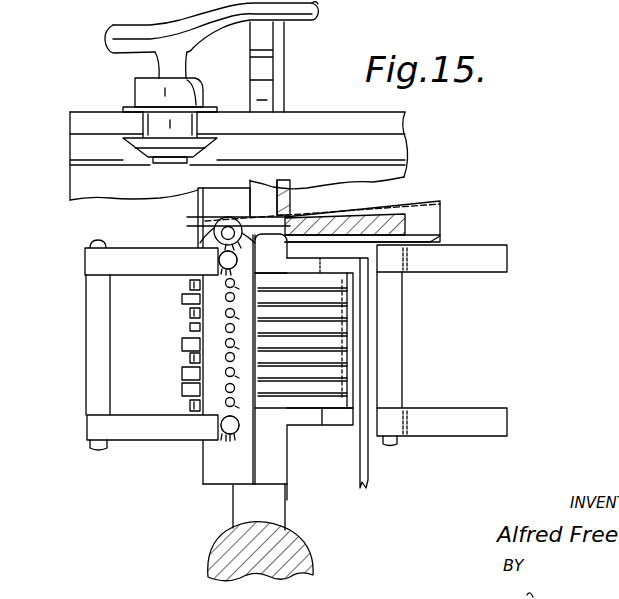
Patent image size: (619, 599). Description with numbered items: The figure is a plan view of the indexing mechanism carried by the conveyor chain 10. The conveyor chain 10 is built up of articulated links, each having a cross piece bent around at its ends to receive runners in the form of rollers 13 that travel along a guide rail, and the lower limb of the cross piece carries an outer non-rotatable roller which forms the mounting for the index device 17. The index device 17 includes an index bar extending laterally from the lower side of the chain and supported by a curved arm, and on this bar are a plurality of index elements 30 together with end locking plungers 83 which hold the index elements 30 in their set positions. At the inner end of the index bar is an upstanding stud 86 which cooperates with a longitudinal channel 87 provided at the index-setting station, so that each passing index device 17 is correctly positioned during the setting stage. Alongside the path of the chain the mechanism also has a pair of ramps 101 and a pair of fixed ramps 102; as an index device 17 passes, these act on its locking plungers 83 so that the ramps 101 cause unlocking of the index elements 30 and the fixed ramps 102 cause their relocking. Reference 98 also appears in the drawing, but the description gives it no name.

The conveyor chain 10 is at (288, 22).
The rollers 13 is at (193, 90).
The index device 17 is at (208, 199).
The index elements 30 is at (226, 346).
The end locking plungers 83 is at (237, 260).
The upstanding stud 86 is at (214, 228).
The longitudinal channel 87 is at (420, 214).
The slats 98 is at (262, 293).
The ramps 101 is at (508, 253).
The fixed ramps 102 is at (158, 262).